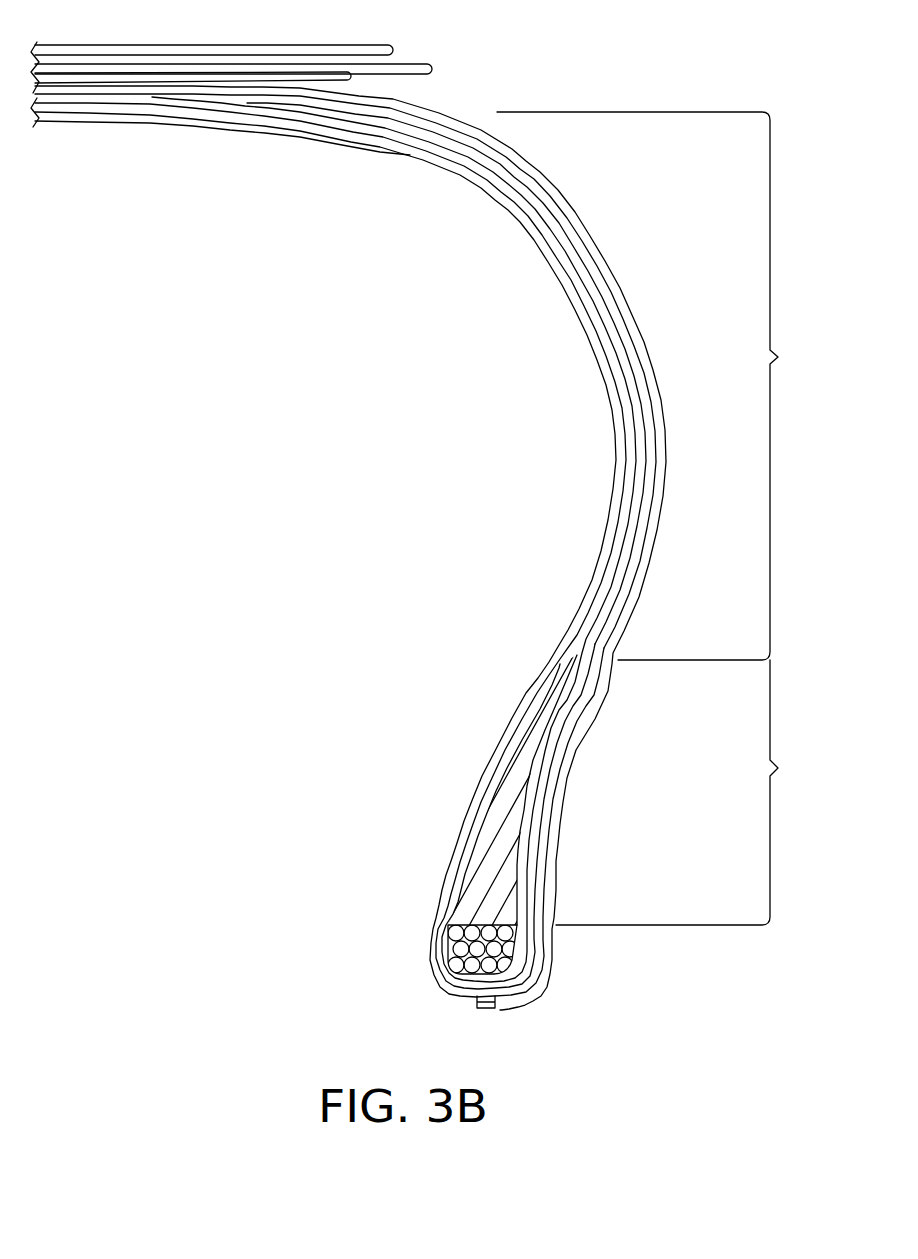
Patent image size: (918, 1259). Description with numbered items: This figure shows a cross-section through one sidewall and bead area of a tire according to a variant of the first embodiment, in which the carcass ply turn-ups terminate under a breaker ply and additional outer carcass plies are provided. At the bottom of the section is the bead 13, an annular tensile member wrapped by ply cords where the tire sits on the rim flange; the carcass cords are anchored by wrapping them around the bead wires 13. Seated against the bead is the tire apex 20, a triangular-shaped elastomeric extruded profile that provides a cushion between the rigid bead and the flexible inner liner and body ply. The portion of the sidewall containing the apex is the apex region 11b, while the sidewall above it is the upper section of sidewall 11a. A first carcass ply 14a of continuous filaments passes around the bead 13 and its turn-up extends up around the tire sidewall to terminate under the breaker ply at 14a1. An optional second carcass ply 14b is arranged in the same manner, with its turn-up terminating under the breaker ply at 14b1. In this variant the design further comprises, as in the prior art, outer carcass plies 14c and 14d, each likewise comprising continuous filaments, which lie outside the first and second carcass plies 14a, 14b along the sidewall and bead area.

The upper section of sidewall 11a is at (661, 386).
The apex region of the sidewall 11b is at (691, 792).
The bead 13 is at (462, 948).
The first carcass ply 14a is at (517, 228).
The turn-up termination of first carcass ply 14a1 is at (255, 103).
The second carcass ply 14b is at (590, 305).
The turn-up termination of second carcass ply 14b1 is at (155, 99).
The outer carcass ply 14c is at (538, 191).
The outer carcass ply 14d is at (521, 158).
The tire apex 20 is at (490, 847).